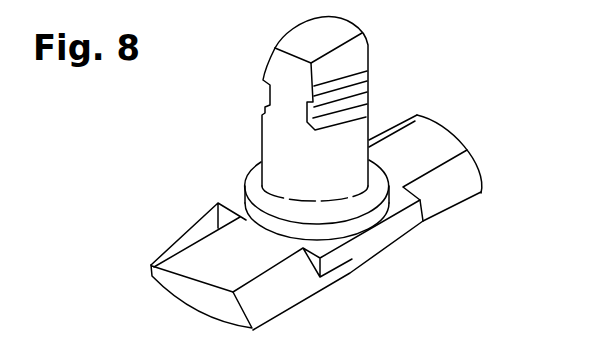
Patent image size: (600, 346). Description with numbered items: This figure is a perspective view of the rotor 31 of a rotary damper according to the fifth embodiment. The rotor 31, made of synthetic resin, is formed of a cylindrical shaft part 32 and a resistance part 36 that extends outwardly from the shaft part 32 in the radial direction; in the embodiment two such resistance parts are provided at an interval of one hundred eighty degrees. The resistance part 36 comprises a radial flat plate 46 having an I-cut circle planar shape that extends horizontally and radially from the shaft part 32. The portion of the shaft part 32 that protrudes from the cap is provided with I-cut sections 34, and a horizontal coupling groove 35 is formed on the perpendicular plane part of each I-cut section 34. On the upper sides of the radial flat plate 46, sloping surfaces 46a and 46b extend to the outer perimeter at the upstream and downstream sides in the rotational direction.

The rotor 31 is at (151, 278).
The shaft part 32 is at (313, 43).
The I-cut sections 34 is at (368, 138).
The horizontal coupling grooves 35 is at (371, 93).
The resistance part 36 is at (316, 222).
The radial flat plate 46 is at (386, 239).
The sloping surface 46a is at (195, 240).
The sloping surface 46b is at (395, 122).